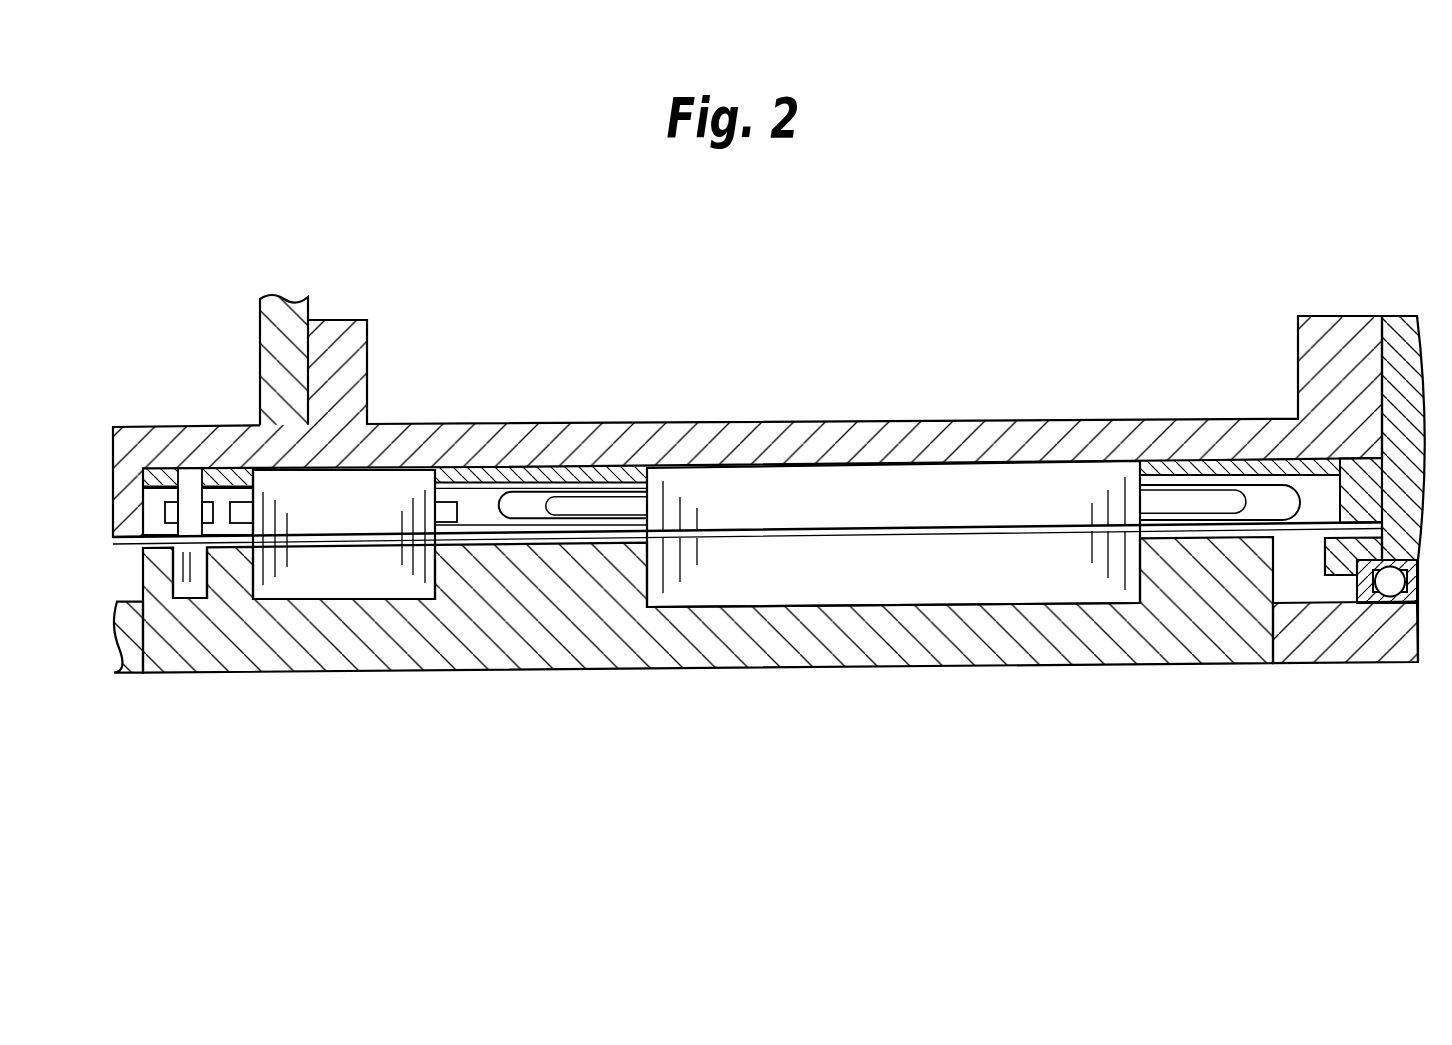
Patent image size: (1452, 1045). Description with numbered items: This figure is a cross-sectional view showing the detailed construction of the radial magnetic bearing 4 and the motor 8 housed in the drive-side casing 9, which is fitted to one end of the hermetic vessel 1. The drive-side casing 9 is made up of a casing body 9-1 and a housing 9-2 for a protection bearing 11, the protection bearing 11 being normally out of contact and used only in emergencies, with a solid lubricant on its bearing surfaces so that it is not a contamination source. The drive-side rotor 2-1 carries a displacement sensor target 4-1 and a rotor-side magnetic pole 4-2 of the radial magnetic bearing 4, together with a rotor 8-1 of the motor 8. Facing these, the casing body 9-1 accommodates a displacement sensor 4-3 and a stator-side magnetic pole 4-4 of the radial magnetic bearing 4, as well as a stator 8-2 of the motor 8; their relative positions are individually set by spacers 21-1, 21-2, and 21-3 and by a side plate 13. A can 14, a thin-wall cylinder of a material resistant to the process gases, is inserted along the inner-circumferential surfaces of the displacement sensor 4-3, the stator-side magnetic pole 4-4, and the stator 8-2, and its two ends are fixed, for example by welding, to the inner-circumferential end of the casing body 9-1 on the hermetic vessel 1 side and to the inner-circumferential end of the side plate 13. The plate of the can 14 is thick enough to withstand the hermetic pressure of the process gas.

The rotating member 1 is at (280, 320).
The base 2-1 is at (133, 647).
The motor 4 is at (298, 562).
The motor core 4-1 is at (193, 595).
The rotor lower portion 4-2 is at (357, 587).
The rotor support 4-3 is at (188, 490).
The rotor 4-4 is at (395, 485).
The stator 8 is at (893, 521).
The stator lower coil 8-1 is at (740, 590).
The stator upper coil 8-2 is at (1037, 480).
The housing 9 is at (769, 443).
The housing upper plate 9-1 is at (708, 433).
The housing side wall 9-2 is at (1400, 317).
The bearing 11 is at (1363, 600).
The spacer 13 is at (1337, 458).
The shaft 14 is at (553, 540).
The bearing holder 21-1 is at (155, 476).
The bearing holder portion 21-2 is at (232, 472).
The bearing holder slot 21-3 is at (512, 475).